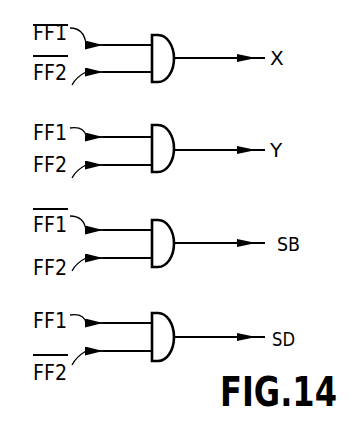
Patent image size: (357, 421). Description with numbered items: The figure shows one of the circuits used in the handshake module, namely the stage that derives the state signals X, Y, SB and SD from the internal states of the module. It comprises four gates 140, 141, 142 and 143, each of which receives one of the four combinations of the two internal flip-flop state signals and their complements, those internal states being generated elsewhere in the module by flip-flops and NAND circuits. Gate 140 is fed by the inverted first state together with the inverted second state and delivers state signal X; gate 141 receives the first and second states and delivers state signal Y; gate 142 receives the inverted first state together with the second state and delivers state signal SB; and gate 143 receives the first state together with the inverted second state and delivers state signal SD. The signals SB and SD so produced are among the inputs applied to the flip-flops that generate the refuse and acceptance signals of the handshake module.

The gate 140 is at (161, 56).
The gate 141 is at (161, 146).
The gate 142 is at (161, 239).
The gate 143 is at (161, 328).